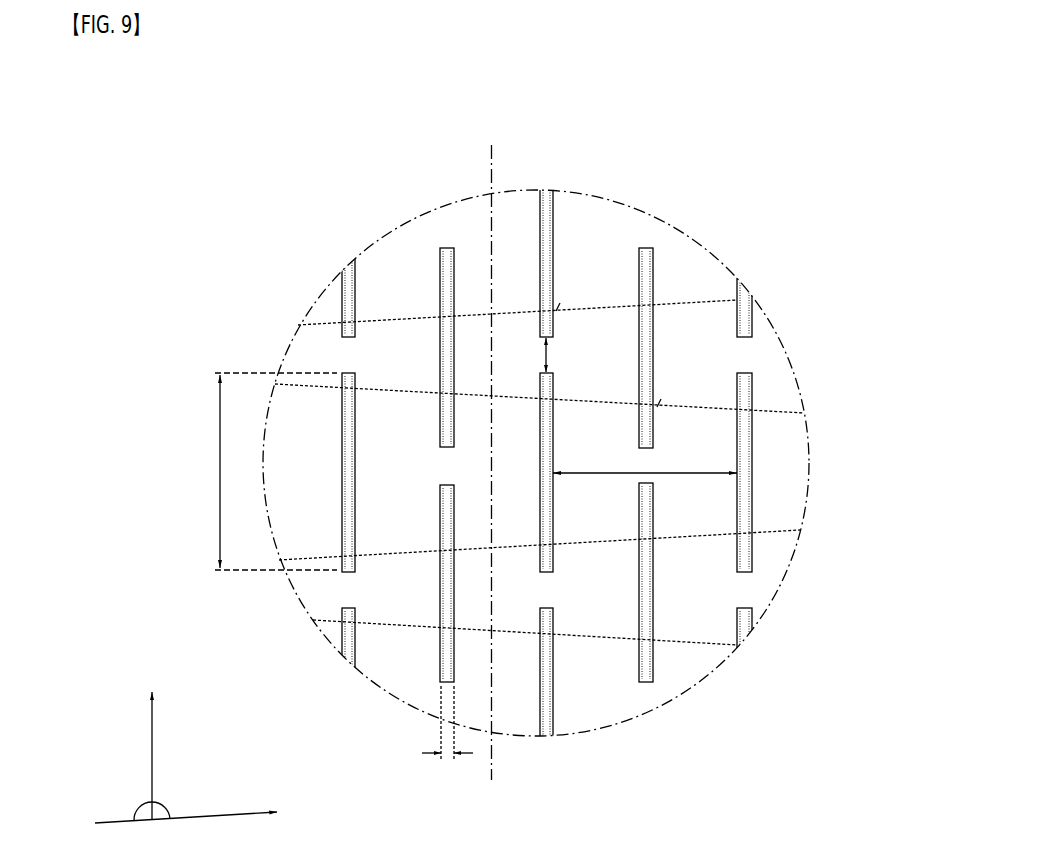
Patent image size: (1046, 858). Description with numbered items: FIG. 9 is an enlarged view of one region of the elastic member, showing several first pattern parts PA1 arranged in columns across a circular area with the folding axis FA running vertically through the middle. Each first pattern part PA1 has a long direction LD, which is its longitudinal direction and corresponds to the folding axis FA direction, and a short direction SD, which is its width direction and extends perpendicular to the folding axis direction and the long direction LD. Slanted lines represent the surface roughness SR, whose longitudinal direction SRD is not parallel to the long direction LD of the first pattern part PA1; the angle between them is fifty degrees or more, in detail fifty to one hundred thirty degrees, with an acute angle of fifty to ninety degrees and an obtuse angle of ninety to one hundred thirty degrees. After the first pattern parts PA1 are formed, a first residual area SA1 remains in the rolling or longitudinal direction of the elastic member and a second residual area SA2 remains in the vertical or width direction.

The folding axis FA is at (497, 443).
The first pattern part PA1 is at (653, 263).
The surface roughness SR is at (412, 317).
The first residual area SA1 is at (645, 460).
The second residual area SA2 is at (564, 355).
The long direction LD is at (239, 596).
The short direction SD is at (447, 739).
The longitudinal direction of the surface roughness SRD is at (206, 815).